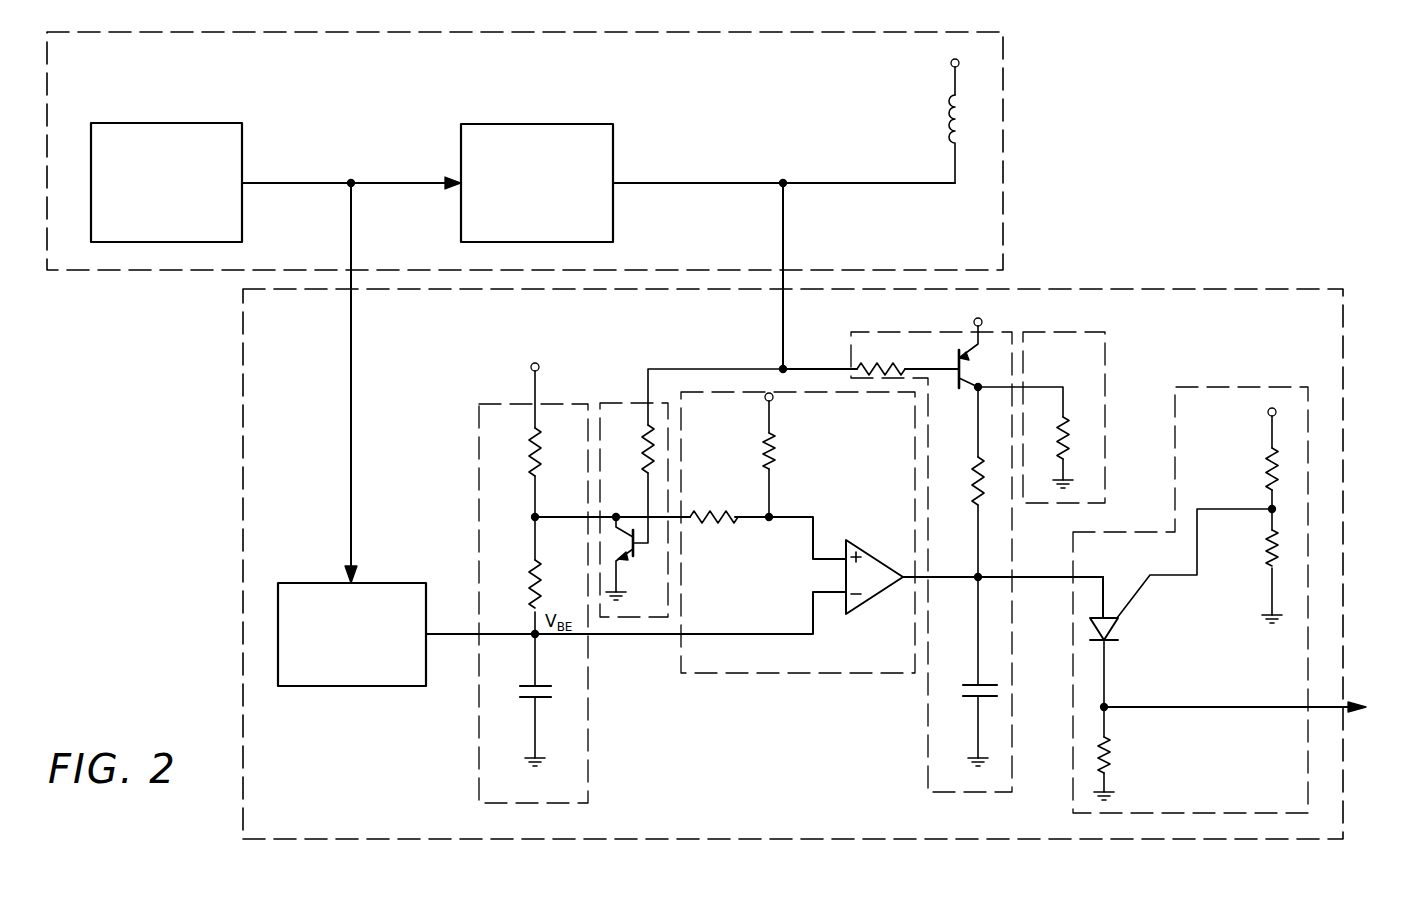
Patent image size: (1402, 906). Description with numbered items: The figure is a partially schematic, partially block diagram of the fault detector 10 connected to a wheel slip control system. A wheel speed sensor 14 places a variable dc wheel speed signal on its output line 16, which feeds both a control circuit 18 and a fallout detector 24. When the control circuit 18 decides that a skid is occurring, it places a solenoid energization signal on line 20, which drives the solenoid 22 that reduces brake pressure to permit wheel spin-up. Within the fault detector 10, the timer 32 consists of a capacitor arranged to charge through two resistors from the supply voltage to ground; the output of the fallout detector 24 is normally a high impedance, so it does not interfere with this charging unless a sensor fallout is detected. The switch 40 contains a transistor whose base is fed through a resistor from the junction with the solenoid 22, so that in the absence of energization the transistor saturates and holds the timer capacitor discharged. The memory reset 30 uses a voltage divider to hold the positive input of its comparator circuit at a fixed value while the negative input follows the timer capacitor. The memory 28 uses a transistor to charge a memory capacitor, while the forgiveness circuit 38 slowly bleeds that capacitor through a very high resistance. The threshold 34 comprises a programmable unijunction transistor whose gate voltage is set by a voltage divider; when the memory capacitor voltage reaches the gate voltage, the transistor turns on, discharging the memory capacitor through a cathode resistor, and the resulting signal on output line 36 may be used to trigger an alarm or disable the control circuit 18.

The fault detector 10 is at (1258, 279).
The wheel speed sensor 14 is at (177, 231).
The output line 16 is at (286, 183).
The control circuit 18 is at (548, 229).
The line 20 is at (652, 183).
The solenoid 22 is at (961, 126).
The fallout detector 24 is at (341, 676).
The memory 28 is at (962, 546).
The memory reset 30 is at (897, 663).
The timer 32 is at (512, 779).
The threshold 34 is at (1214, 433).
The output line 36 is at (1272, 707).
The forgiveness circuit 38 is at (1082, 367).
The switch 40 is at (634, 438).